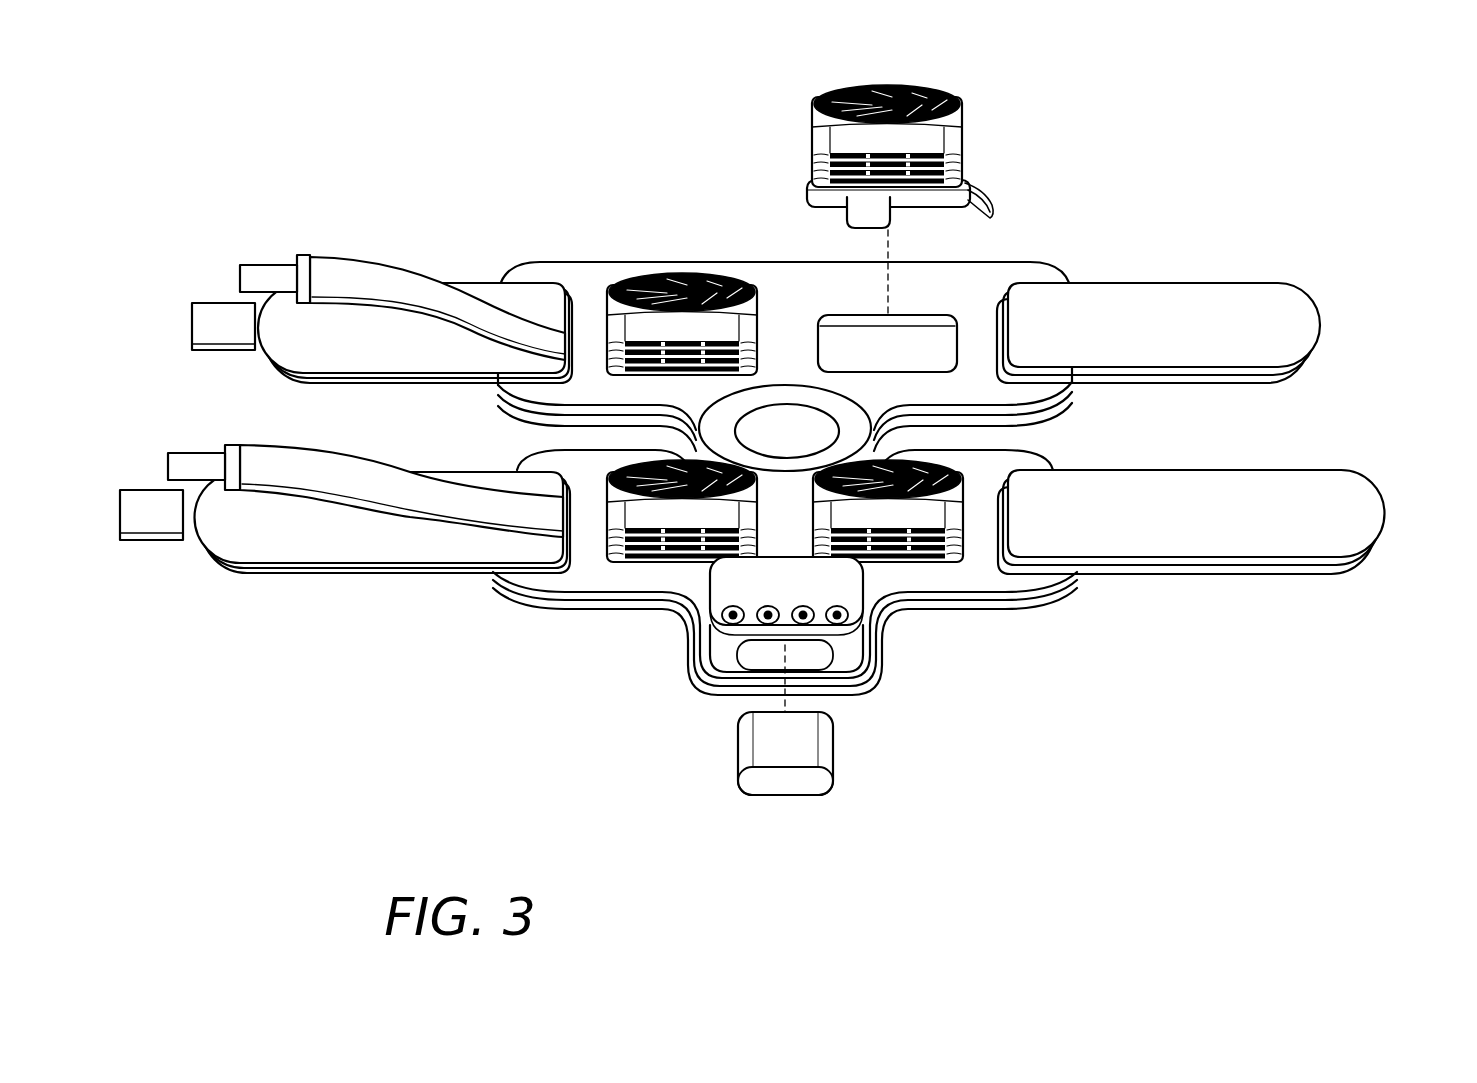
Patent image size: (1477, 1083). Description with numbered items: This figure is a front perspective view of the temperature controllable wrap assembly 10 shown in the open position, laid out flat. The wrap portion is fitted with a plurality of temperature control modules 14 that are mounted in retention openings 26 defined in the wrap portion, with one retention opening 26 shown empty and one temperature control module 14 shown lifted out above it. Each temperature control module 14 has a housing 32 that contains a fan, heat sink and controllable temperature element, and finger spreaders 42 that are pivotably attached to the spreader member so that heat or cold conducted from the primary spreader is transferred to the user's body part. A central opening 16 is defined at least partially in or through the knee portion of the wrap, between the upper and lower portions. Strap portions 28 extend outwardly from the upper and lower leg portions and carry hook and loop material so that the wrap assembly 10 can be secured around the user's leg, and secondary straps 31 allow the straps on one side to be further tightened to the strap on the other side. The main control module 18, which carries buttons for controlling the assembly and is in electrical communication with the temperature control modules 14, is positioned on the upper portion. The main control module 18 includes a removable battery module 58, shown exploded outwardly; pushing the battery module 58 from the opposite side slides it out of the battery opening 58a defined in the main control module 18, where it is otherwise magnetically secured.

The temperature controllable wrap assembly 10 is at (784, 425).
The temperature control module 14 is at (843, 351).
The central opening 16 is at (770, 442).
The main control module 18 is at (727, 584).
The retention opening 26 is at (945, 333).
The strap portion 28 is at (305, 345).
The secondary strap 31 is at (432, 288).
The housing 32 is at (820, 137).
The finger spreader 42 is at (990, 192).
The battery module 58 is at (778, 740).
The battery opening 58a is at (757, 660).